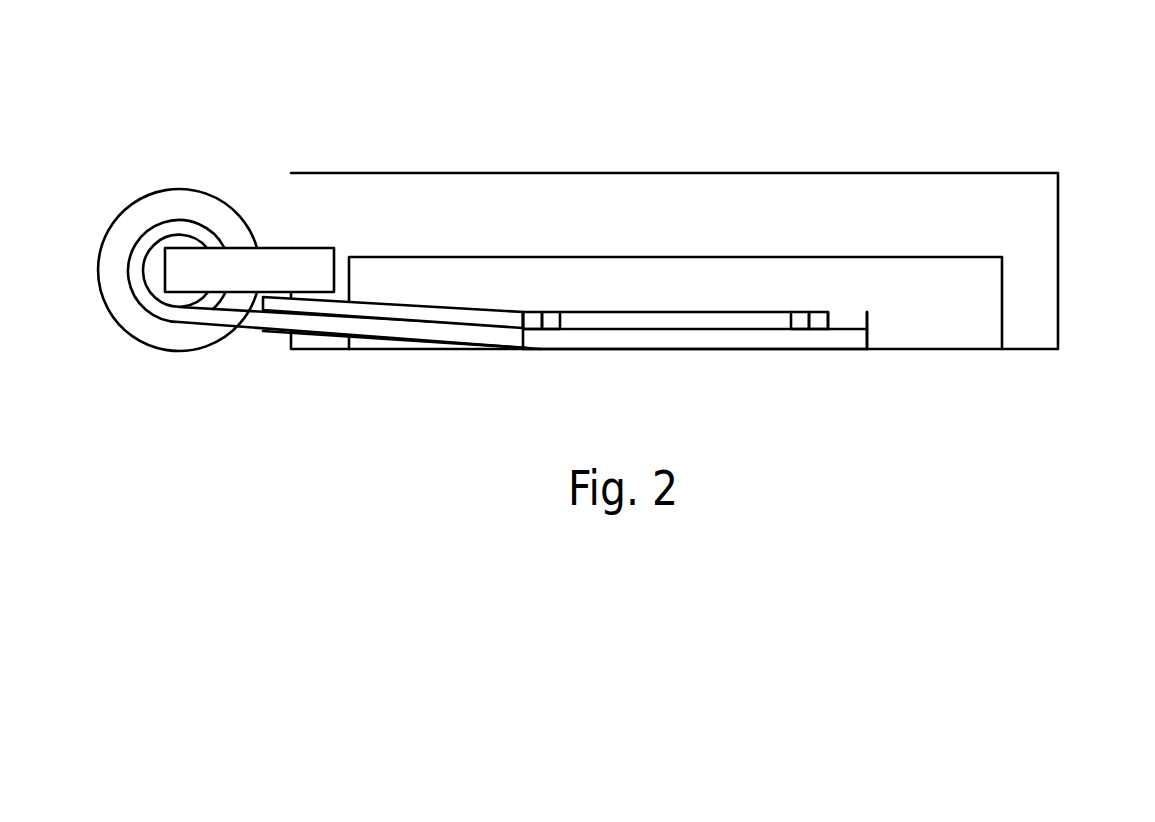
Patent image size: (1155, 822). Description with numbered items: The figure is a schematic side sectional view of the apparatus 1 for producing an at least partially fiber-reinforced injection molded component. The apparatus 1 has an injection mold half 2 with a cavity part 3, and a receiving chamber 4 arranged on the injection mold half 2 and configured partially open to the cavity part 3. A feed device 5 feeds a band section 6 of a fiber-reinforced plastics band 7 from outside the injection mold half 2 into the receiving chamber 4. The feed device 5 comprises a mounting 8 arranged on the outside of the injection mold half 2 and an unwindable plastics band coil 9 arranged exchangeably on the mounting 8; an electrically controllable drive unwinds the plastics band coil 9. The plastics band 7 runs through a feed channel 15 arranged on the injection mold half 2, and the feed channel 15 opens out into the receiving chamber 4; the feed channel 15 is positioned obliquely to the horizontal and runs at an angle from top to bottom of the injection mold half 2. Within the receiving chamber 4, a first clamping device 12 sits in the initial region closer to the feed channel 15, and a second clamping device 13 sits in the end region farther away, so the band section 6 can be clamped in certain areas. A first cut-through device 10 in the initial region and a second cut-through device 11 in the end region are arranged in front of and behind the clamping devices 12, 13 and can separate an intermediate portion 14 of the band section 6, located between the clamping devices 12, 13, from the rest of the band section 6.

The apparatus 1 is at (620, 225).
The injection mold half 2 is at (963, 212).
The cavity part 3 is at (972, 287).
The receiving chamber 4 is at (847, 325).
The feed device 5 is at (319, 248).
The band section 6 is at (785, 340).
The fiber-reinforced plastics band 7 is at (248, 338).
The mounting 8 is at (272, 238).
The plastics band coil 9 is at (173, 337).
The first cut-through device 10 is at (531, 325).
The second cut-through device 11 is at (822, 325).
The first clamping device 12 is at (550, 325).
The second clamping device 13 is at (800, 325).
The intermediate portion 14 is at (661, 330).
The feed channel 15 is at (428, 316).